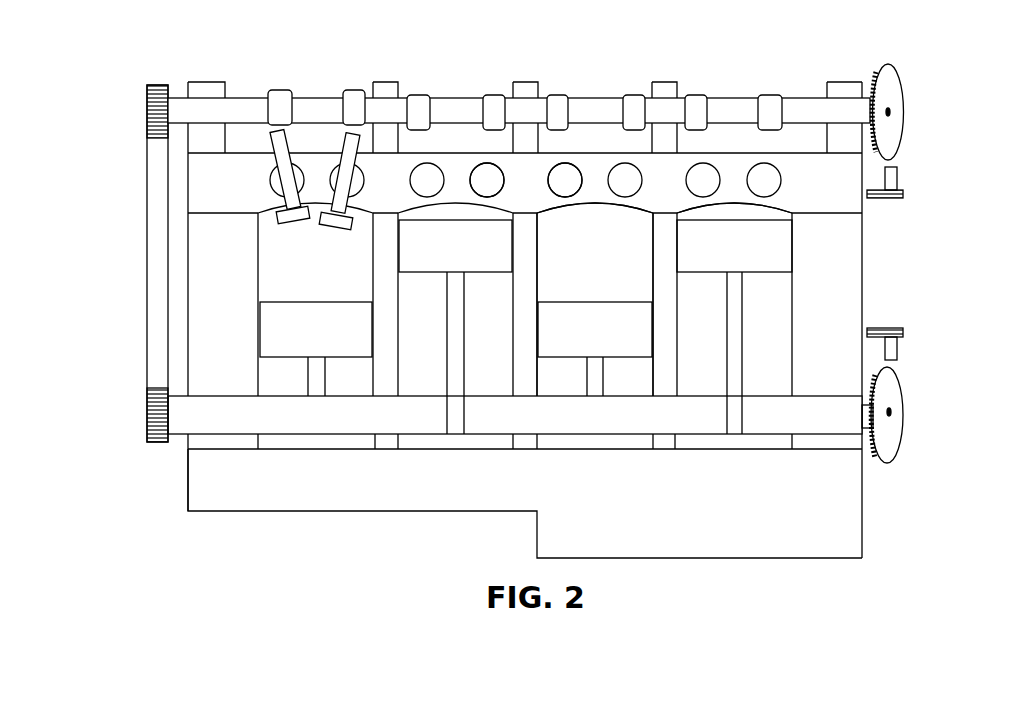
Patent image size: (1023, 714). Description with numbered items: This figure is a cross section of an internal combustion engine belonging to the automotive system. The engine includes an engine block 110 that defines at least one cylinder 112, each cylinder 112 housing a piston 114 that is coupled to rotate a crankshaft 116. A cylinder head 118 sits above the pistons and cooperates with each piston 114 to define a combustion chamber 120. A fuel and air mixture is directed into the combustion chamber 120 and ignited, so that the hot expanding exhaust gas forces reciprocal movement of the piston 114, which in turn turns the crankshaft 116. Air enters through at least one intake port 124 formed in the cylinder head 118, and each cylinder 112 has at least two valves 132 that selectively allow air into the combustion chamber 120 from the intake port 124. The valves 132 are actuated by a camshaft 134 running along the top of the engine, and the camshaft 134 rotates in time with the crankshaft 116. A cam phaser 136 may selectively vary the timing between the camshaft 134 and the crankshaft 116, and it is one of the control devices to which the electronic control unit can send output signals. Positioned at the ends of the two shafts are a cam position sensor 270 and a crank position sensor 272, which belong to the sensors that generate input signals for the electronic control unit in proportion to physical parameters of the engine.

The engine block 110 is at (188, 338).
The cylinder 112 is at (537, 280).
The piston 114 is at (580, 337).
The crankshaft 116 is at (220, 415).
The cylinder head 118 is at (188, 207).
The combustion chamber 120 is at (735, 213).
The intake port 124 is at (483, 163).
The valves 132 is at (273, 220).
The camshaft 134 is at (317, 98).
The cam phaser 136 is at (147, 112).
The cam position sensor 270 is at (905, 193).
The crank position sensor 272 is at (905, 333).